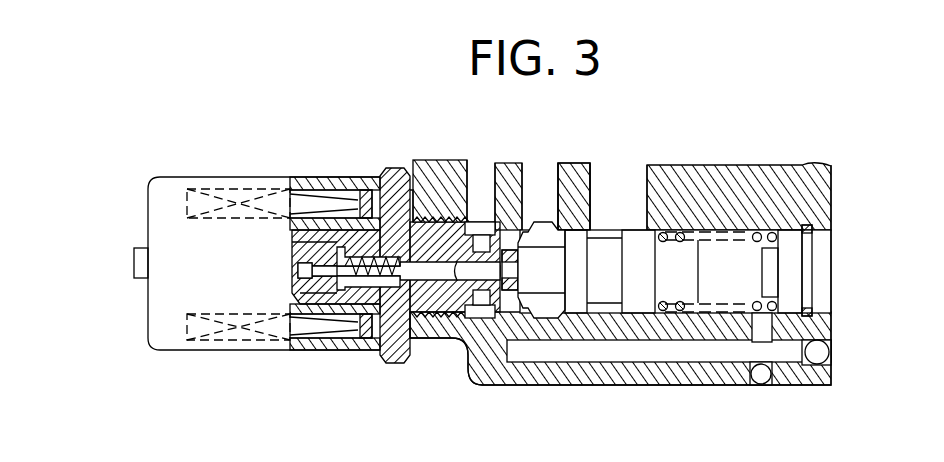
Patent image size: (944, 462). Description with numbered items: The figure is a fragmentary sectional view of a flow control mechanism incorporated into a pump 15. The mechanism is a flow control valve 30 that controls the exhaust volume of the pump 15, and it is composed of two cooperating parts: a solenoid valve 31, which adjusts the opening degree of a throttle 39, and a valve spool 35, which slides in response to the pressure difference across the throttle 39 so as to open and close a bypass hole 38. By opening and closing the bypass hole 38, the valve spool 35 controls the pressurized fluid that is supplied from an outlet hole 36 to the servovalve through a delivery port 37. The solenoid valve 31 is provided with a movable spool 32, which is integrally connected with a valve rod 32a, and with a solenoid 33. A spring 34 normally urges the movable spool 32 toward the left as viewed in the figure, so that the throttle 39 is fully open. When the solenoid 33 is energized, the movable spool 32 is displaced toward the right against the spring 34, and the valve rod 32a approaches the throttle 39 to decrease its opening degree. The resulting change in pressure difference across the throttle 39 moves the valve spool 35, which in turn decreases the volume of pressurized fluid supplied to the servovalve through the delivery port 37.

The pump 15 is at (684, 364).
The flow control valve 30 is at (442, 360).
The solenoid valve 31 is at (255, 177).
The movable spool 32 is at (316, 213).
The valve rod 32a is at (443, 262).
The solenoid 33 is at (340, 326).
The spring 34 is at (394, 168).
The valve spool 35 is at (578, 302).
The outlet hole 36 is at (560, 177).
The delivery port 37 is at (488, 221).
The bypass hole 38 is at (646, 178).
The throttle 39 is at (522, 286).